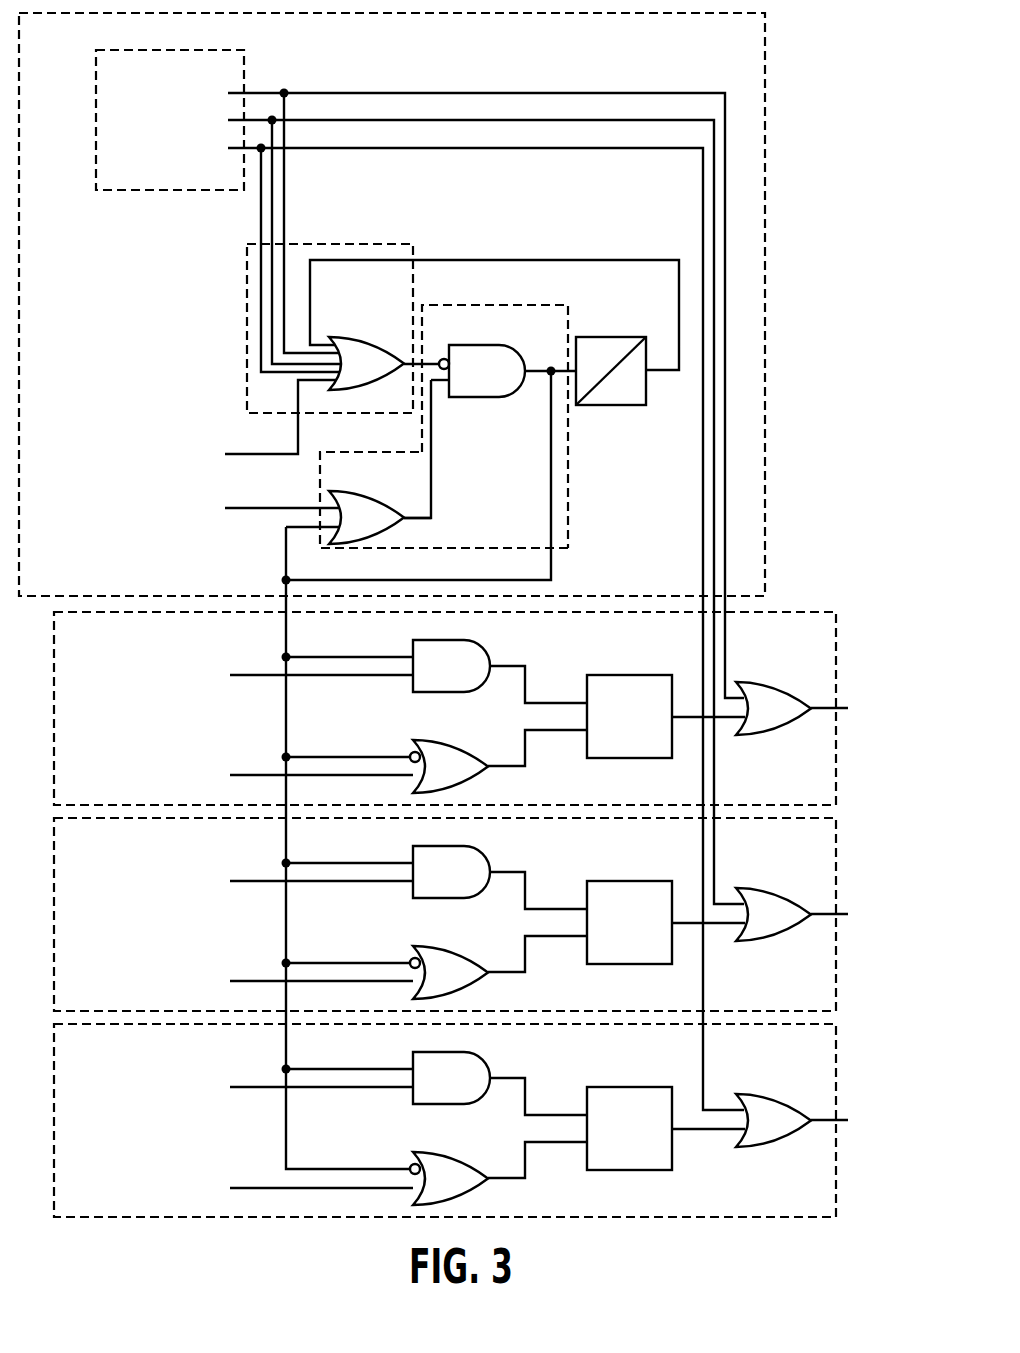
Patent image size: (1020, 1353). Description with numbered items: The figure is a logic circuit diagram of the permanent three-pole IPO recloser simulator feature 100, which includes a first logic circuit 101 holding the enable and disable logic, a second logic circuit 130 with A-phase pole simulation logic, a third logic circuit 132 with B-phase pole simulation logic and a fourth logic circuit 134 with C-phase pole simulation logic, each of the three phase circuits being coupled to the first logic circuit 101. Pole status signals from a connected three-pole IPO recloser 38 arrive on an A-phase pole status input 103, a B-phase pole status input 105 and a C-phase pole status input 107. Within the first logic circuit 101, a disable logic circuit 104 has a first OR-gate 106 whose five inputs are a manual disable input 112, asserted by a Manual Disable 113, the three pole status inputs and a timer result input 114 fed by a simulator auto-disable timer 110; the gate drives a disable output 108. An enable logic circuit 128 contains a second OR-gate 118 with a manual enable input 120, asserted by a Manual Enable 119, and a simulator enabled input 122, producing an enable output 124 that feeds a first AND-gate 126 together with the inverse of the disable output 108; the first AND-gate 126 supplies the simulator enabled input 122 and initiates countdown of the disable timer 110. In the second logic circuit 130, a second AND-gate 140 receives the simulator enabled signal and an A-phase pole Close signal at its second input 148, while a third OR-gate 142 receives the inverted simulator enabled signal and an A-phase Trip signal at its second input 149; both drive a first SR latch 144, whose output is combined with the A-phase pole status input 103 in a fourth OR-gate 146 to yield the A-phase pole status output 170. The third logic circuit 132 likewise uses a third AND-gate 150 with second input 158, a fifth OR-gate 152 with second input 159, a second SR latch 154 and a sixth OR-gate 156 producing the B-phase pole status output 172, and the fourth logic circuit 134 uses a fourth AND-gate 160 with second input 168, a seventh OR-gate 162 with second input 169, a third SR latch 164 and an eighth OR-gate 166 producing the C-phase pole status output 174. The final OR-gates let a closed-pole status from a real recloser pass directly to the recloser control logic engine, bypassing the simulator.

The permanent three-pole IPO recloser simulator feature 100 is at (836, 63).
The first logic circuit 101 is at (765, 163).
The 3-pole IPO recloser 38 is at (192, 50).
The A-phase pole status input 103 is at (350, 93).
The B-phase pole status input 105 is at (410, 120).
The C-phase pole status input 107 is at (360, 148).
The disable logic circuit 104 is at (247, 337).
The first OR-gate 106 is at (338, 336).
The disable output 108 is at (437, 349).
The simulator auto-disable timer 110 is at (611, 338).
The manual disable input 112 is at (238, 456).
The Manual Disable 113 is at (102, 443).
The timer result input 114 is at (450, 262).
The second OR-gate 118 is at (347, 490).
The Manual Enable 119 is at (115, 526).
The manual enable input 120 is at (258, 510).
The simulator enabled input 122 is at (551, 508).
The enable output 124 is at (433, 452).
The first AND-gate 126 is at (500, 340).
The enable logic circuit 128 is at (568, 470).
The second logic circuit 130 is at (836, 650).
The third logic circuit 132 is at (836, 856).
The fourth logic circuit 134 is at (836, 1062).
The second AND-gate 140 is at (480, 645).
The third OR-gate 142 is at (490, 722).
The first SR latch 144 is at (585, 741).
The fourth OR-gate 146 is at (752, 684).
The second input of the second AND-gate 148 is at (320, 678).
The second input of the third OR-gate 149 is at (320, 778).
The third AND-gate 150 is at (480, 851).
The fifth OR-gate 152 is at (490, 928).
The second SR latch 154 is at (585, 947).
The sixth OR-gate 156 is at (752, 890).
The second input of the third AND-gate 158 is at (320, 884).
The second input of the fifth OR-gate 159 is at (320, 984).
The fourth AND-gate 160 is at (480, 1057).
The seventh OR-gate 162 is at (490, 1134).
The third SR latch 164 is at (585, 1153).
The eighth OR-gate 166 is at (752, 1096).
The second input of the fourth AND-gate 168 is at (322, 1090).
The second input of the seventh OR-gate 169 is at (282, 1190).
The A-phase pole status output 170 is at (845, 708).
The B-phase pole status output 172 is at (845, 914).
The C-phase pole status output 174 is at (845, 1120).